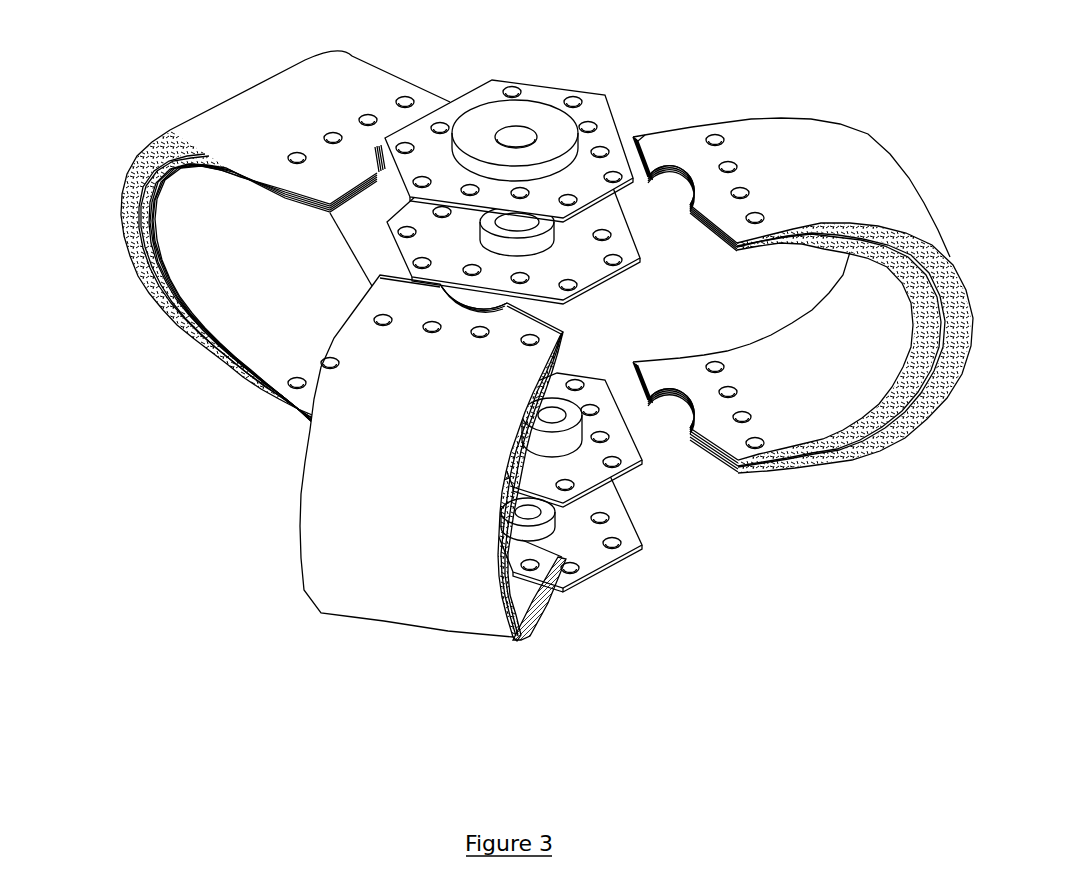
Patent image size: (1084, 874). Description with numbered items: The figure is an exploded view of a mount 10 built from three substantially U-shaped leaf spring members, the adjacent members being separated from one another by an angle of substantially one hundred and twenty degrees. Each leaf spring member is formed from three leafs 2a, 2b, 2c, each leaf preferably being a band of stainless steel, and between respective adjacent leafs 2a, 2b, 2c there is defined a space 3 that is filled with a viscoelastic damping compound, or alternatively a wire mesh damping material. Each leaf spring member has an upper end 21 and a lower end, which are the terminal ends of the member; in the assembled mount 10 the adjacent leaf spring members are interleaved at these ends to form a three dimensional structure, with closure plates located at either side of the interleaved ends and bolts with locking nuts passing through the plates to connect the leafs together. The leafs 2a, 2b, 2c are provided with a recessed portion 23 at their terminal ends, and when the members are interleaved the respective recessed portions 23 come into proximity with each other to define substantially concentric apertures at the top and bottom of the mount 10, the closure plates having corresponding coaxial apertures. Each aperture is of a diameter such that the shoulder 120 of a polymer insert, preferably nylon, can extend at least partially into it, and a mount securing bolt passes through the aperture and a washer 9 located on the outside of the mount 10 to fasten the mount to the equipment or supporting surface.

The leaf 2a is at (140, 263).
The leaf 2b is at (173, 303).
The leaf 2c is at (197, 325).
The space 3 is at (887, 418).
The washer 9 is at (537, 117).
The mount 10 is at (517, 363).
The upper end 21 is at (655, 93).
The recessed portion 23 is at (472, 300).
The shoulder 120 is at (487, 235).